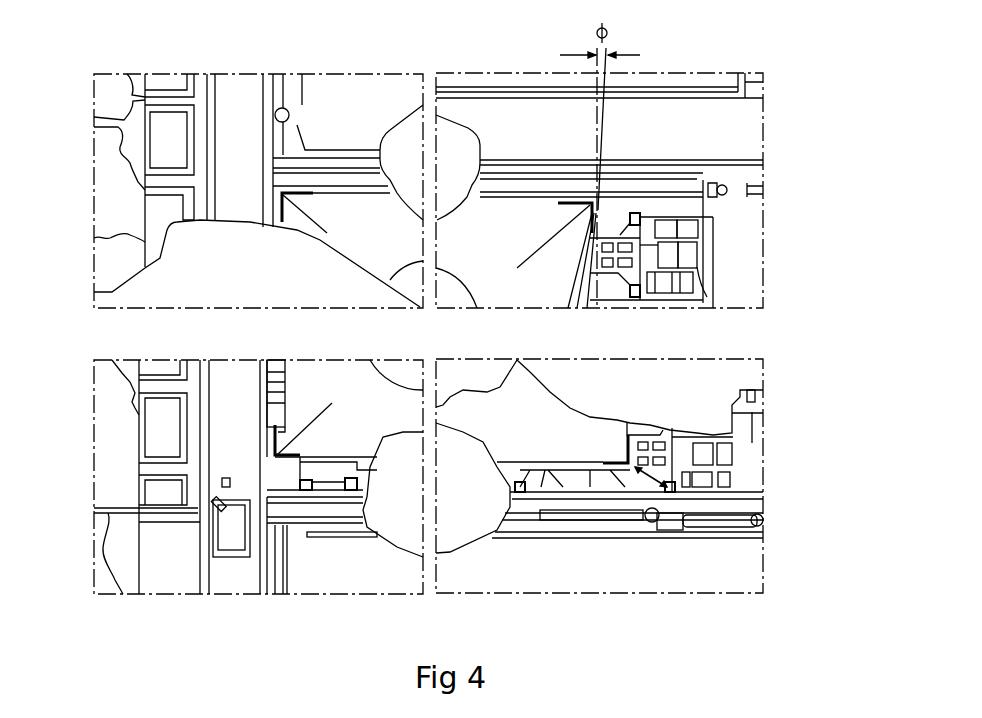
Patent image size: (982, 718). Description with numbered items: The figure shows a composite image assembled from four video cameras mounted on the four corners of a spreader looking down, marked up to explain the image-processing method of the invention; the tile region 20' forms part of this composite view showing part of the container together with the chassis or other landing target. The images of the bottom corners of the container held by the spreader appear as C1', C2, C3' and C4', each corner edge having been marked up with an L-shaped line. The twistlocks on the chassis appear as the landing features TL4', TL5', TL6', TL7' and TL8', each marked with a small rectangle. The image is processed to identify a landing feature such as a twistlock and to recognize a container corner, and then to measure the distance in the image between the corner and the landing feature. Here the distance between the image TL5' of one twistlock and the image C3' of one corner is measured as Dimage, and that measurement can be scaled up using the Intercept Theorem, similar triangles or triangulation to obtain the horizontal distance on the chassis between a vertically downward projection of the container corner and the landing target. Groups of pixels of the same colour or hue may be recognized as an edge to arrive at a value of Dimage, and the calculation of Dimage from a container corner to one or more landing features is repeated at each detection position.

The map tile region 20' is at (258, 176).
The image of container corner C1' is at (186, 197).
The container corner C2 is at (596, 225).
The image of container corner C3' is at (720, 444).
The image of container corner C4' is at (190, 432).
The image of twistlock TL4' is at (731, 219).
The image of twistlock TL5' is at (736, 387).
The image of twistlock TL6' is at (487, 560).
The image of twistlock TL7' is at (289, 558).
The image of twistlock TL8' is at (174, 498).
The distance in the image Dimage is at (647, 483).